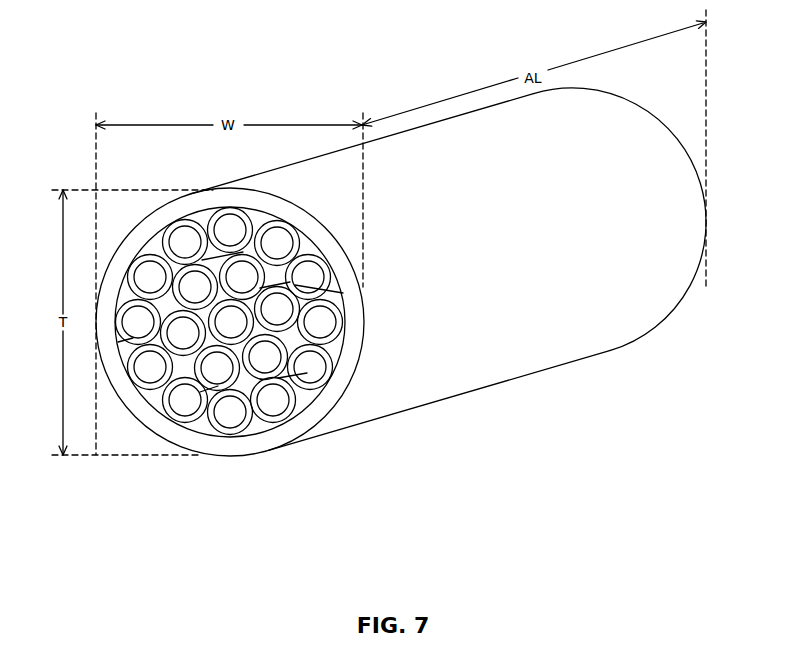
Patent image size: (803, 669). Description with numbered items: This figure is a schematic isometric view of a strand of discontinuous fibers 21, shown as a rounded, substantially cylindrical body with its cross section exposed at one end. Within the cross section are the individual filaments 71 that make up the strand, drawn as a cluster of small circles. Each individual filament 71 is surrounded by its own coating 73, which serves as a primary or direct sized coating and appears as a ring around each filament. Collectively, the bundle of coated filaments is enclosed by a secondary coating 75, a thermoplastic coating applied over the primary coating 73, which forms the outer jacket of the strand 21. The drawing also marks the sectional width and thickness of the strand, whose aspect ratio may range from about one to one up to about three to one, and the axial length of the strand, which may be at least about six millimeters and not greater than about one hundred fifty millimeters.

The strand of discontinuous fibers 21 is at (197, 508).
The individual filament 71 is at (308, 362).
The coating 73 is at (213, 425).
The secondary coating 75 is at (347, 352).